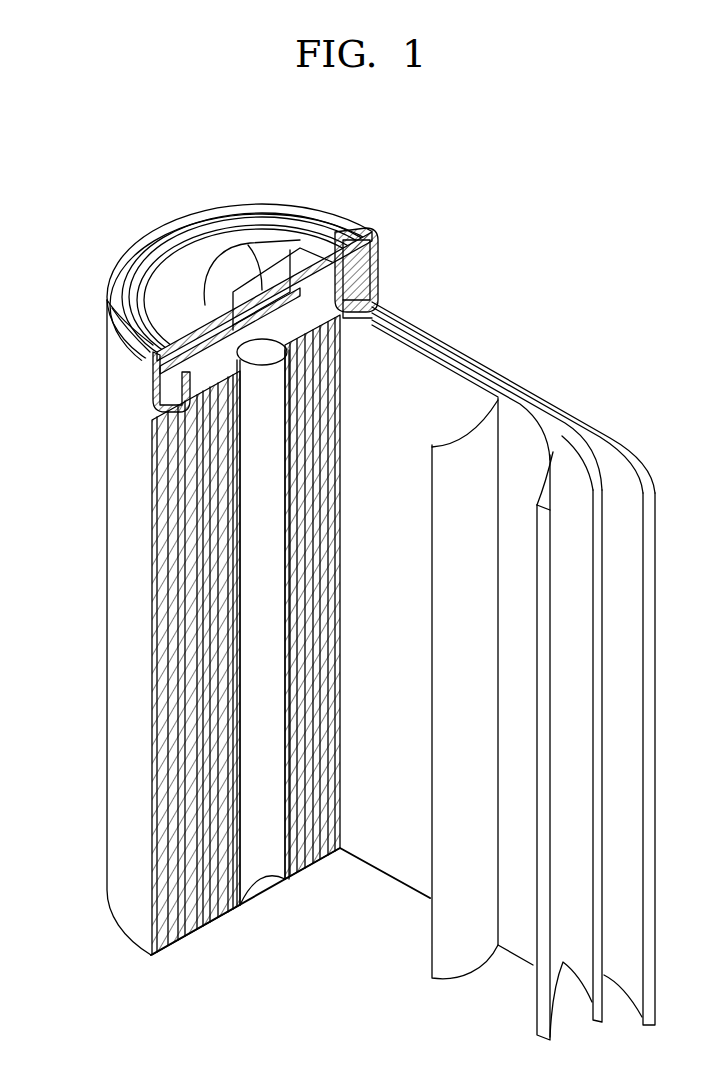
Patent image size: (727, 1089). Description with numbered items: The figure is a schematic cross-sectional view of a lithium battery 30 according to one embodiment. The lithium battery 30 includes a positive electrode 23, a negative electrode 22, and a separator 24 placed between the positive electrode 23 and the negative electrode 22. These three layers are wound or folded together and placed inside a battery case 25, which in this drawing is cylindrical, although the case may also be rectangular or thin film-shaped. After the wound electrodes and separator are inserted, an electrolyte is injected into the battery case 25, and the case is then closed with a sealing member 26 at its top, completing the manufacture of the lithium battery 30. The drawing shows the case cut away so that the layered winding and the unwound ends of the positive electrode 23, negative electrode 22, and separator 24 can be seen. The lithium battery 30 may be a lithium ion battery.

The lithium battery 30 is at (492, 161).
The battery case 25 is at (118, 627).
The sealing member 26 is at (233, 248).
The negative electrode 22 is at (628, 458).
The positive electrode 23 is at (549, 455).
The separator 24 is at (595, 457).